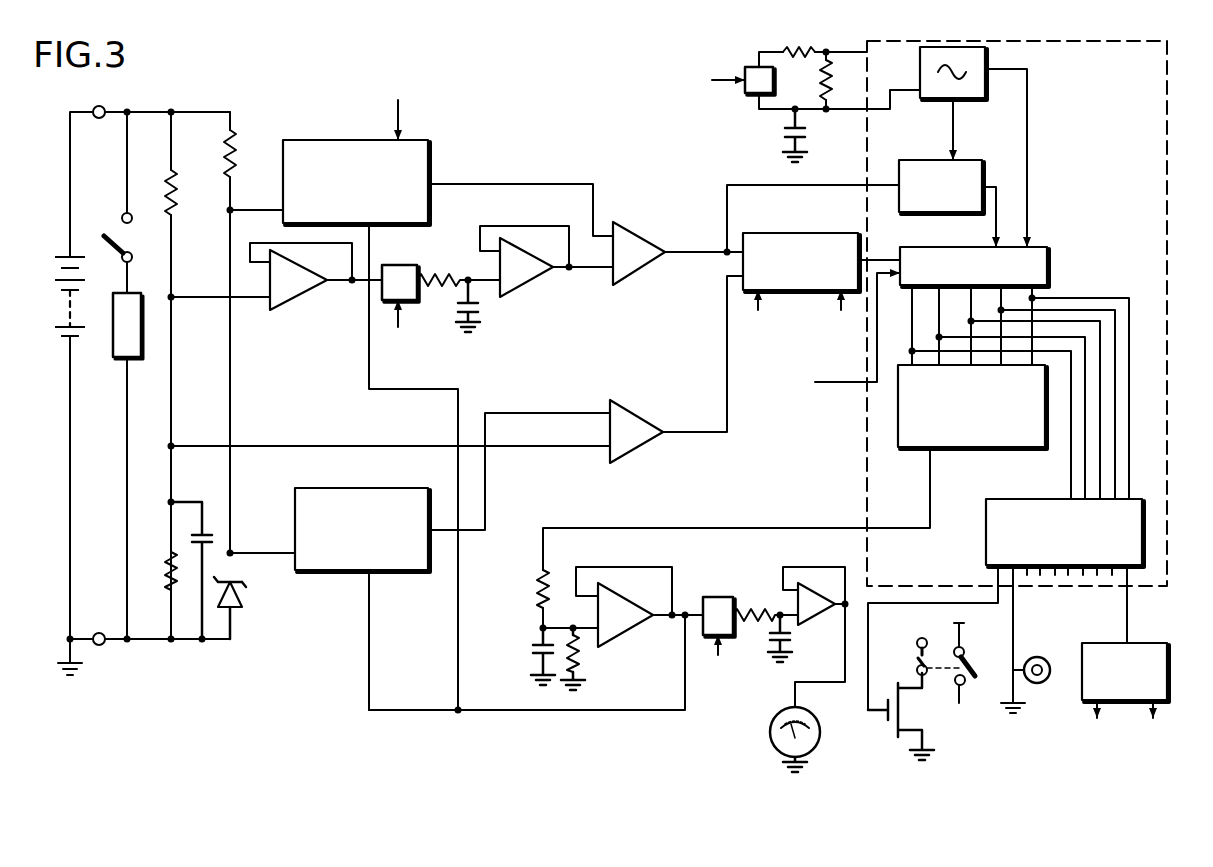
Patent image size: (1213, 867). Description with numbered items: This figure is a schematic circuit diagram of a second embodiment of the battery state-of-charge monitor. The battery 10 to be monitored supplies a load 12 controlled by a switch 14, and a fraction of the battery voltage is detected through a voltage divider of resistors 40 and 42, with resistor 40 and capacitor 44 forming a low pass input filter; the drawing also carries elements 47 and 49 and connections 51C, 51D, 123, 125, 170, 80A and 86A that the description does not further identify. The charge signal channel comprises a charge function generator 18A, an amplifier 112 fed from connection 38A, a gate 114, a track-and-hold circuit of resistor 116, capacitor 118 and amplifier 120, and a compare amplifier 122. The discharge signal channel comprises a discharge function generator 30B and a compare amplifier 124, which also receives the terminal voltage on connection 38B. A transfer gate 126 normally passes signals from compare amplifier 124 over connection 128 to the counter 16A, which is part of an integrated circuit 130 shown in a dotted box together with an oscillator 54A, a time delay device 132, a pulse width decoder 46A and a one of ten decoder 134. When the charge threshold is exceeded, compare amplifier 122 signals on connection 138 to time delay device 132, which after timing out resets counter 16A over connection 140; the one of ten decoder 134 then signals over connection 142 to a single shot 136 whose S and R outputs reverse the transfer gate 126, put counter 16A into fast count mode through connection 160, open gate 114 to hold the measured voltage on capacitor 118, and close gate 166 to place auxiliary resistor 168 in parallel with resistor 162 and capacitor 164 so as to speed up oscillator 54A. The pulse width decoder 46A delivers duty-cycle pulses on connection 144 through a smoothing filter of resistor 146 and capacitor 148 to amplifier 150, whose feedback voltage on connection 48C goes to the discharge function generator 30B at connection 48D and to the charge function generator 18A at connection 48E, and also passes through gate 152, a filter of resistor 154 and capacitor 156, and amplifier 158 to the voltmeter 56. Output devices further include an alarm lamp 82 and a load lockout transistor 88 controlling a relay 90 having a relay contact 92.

The battery 10 is at (70, 255).
The load 12 is at (120, 357).
The switch 14 is at (124, 243).
The resistor 40 is at (179, 196).
The resistor 42 is at (168, 566).
The capacitor 44 is at (210, 532).
The zener diode 47 is at (244, 590).
The resistor 49 is at (240, 148).
The connection to charge function generator 51C is at (268, 210).
The connection to discharge function generator 51D is at (273, 551).
The connection 38A is at (246, 297).
The connection 38B is at (310, 446).
The charge function generator 18A is at (358, 140).
The discharge function generator 30B is at (406, 488).
The reset input 170 is at (402, 112).
The charge function output line 123 is at (520, 195).
The discharge function output line 125 is at (485, 505).
The amplifier 112 is at (304, 295).
The gate 114 is at (399, 265).
The resistor 116 is at (456, 250).
The capacitor 118 is at (476, 320).
The amplifier 120 is at (530, 288).
The compare amplifier 122 is at (640, 232).
The compare amplifier 124 is at (645, 414).
The transfer gate 126 is at (798, 233).
The connection 128 is at (908, 236).
The connection 138 is at (766, 185).
The connection 140 is at (994, 222).
The time delay device 132 is at (956, 160).
The oscillator 54A is at (985, 58).
The integrated circuit 130 is at (1170, 72).
The counter 16A is at (1048, 254).
The connection 160 is at (868, 382).
The pulse width decoder 46A is at (980, 447).
The one of ten decoder 134 is at (986, 546).
The monostable multivibrator circuit 136 is at (1152, 643).
The connection 142 is at (1127, 606).
The decoder output line to lamp 80A is at (1016, 626).
The alarm lamp 82 is at (1049, 680).
The decoder output line to transistor 86A is at (942, 603).
The transistor 88 is at (888, 710).
The relay 90 is at (918, 672).
The relay contact 92 is at (965, 650).
The voltmeter 56 is at (776, 716).
The connection 144 is at (736, 528).
The resistor 146 is at (538, 586).
The capacitor 148 is at (534, 650).
The amplifier 150 is at (610, 640).
The gate 152 is at (719, 597).
The resistor 154 is at (766, 584).
The capacitor 156 is at (794, 637).
The amplifier 158 is at (804, 602).
The connection 48C is at (532, 710).
The connection 48D is at (370, 658).
The connection 48E is at (422, 389).
The resistor 162 is at (822, 84).
The capacitor 164 is at (785, 130).
The gate 166 is at (745, 70).
The auxiliary resistor 168 is at (780, 50).